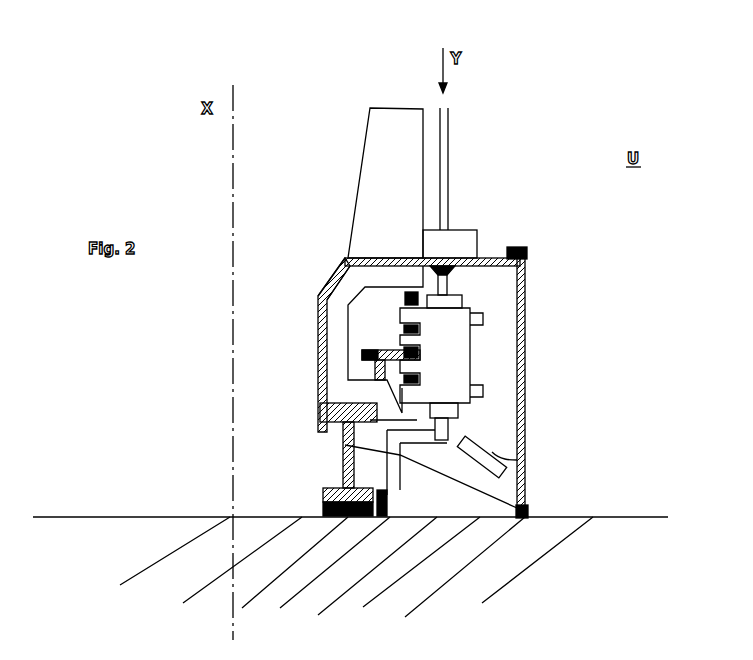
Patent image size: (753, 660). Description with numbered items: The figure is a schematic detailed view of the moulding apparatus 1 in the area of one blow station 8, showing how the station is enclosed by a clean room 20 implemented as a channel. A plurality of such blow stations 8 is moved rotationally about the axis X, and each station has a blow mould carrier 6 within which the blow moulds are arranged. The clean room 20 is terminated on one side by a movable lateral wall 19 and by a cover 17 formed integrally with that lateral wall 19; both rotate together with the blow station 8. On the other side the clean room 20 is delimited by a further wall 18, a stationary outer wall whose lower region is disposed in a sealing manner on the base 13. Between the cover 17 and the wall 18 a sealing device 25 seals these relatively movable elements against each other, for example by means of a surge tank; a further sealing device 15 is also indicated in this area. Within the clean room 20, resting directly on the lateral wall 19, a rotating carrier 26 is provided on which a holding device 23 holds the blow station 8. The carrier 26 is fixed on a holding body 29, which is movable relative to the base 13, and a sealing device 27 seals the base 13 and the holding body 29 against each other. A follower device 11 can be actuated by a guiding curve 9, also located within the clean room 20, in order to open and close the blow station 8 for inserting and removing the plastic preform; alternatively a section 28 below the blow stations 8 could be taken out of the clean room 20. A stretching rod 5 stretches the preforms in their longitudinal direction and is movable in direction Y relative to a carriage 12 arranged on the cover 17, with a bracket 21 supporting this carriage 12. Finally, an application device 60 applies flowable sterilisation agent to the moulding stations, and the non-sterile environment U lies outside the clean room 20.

The moulding apparatus 1 is at (331, 169).
The stretching rod 5 is at (448, 178).
The blow mould carrier 6 is at (462, 373).
The blow station 8 is at (462, 338).
The guiding curve 9 is at (387, 497).
The follower device 11 is at (522, 508).
The carriage 12 is at (462, 238).
The base 13 is at (563, 560).
The sealing device 15 is at (460, 272).
The cover 17 is at (393, 257).
The wall 18 is at (525, 317).
The lateral wall 19 is at (318, 338).
The clean room 20 is at (328, 267).
The bracket 21 is at (410, 150).
The holding device 23 is at (380, 350).
The sealing device 25 is at (527, 252).
The carrier 26 is at (345, 388).
The sealing device 27 is at (323, 507).
The section 28 is at (448, 433).
The holding body 29 is at (343, 470).
The application device 60 is at (345, 445).